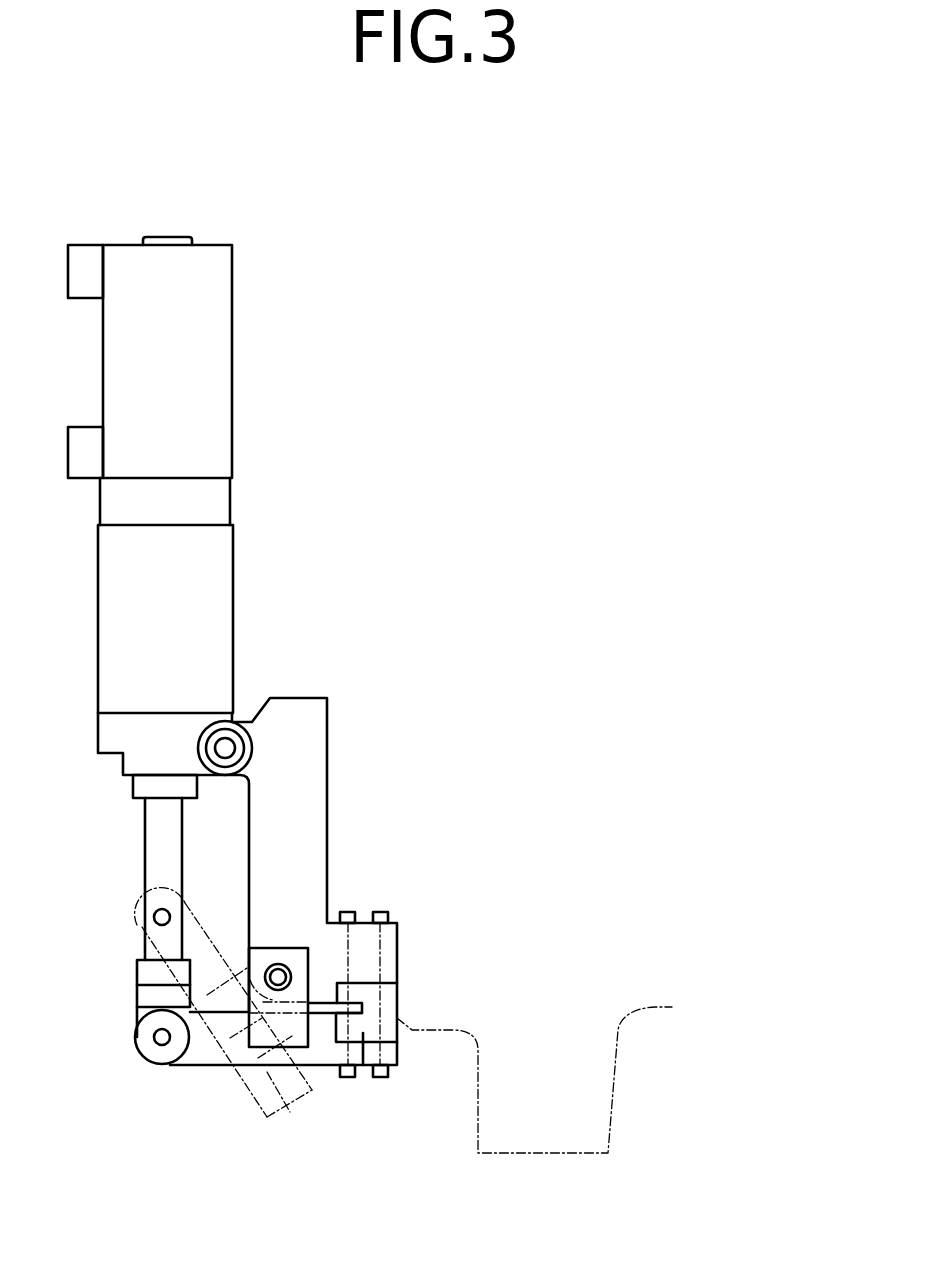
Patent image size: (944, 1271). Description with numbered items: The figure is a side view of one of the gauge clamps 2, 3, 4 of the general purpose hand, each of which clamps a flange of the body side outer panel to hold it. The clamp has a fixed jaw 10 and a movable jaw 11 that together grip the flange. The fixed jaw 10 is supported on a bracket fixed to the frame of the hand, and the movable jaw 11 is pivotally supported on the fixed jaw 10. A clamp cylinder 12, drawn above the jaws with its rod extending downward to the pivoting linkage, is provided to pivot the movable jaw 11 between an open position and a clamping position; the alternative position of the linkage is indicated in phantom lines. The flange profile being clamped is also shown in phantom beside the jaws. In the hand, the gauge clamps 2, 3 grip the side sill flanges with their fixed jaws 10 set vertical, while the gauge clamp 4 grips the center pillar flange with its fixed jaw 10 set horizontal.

The gauge clamp 2 is at (370, 719).
The gauge clamp 3 is at (370, 719).
The gauge clamp 4 is at (388, 697).
The fixed jaw 10 is at (370, 998).
The movable jaw 11 is at (363, 1065).
The clamp cylinder 12 is at (220, 633).